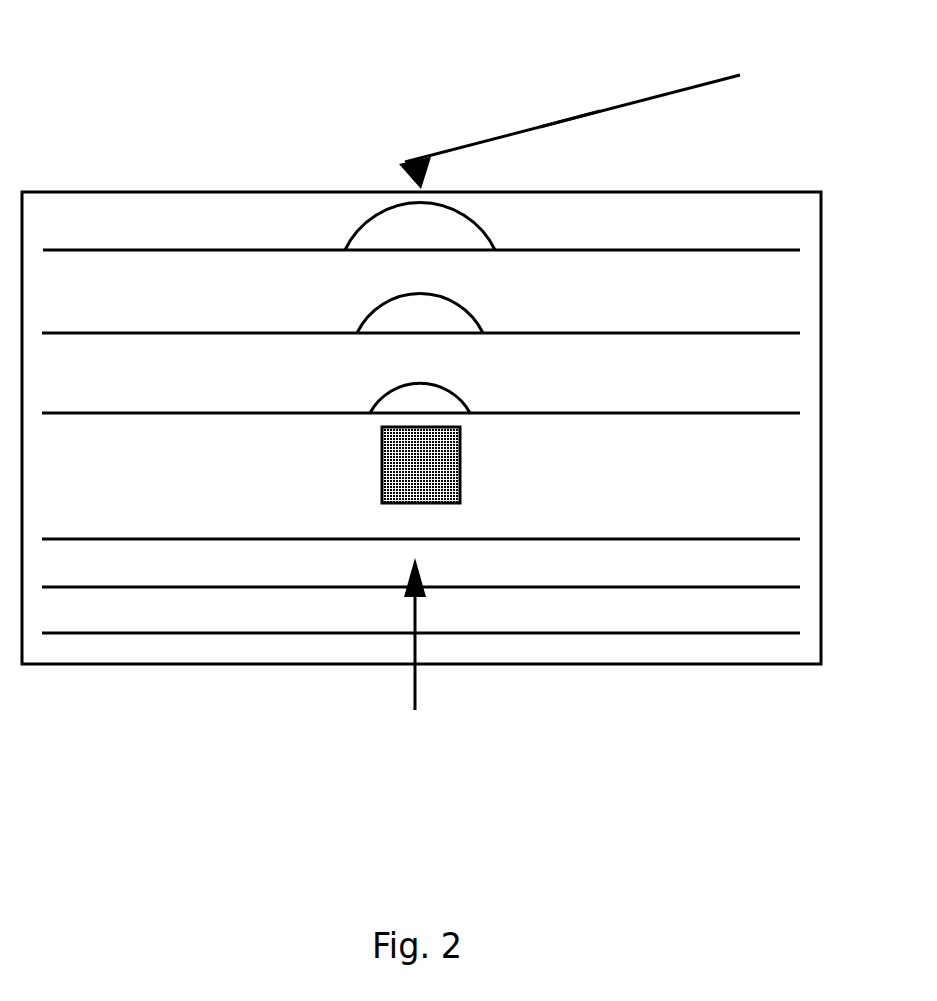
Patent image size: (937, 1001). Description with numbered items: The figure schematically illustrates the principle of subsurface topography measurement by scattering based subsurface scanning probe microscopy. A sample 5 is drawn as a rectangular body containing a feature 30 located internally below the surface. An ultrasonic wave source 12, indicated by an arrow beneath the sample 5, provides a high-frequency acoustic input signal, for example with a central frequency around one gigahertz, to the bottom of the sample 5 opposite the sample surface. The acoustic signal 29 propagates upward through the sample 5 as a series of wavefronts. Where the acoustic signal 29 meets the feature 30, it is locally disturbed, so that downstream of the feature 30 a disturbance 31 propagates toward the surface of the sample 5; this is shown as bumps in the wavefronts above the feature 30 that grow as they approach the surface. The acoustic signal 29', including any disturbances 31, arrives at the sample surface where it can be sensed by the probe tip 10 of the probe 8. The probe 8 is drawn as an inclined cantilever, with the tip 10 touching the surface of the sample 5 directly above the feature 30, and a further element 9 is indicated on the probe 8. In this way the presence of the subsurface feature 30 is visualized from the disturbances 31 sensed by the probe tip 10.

The sample 5 is at (821, 436).
The probe 8 is at (683, 88).
The cantilever beam 9 is at (570, 124).
The probe tip 10 is at (415, 180).
The ultrasonic wave source 12 is at (322, 769).
The acoustic signal 29 is at (421, 535).
The acoustic signal 29' is at (421, 300).
The feature 30 is at (382, 482).
The disturbance 31 is at (470, 308).